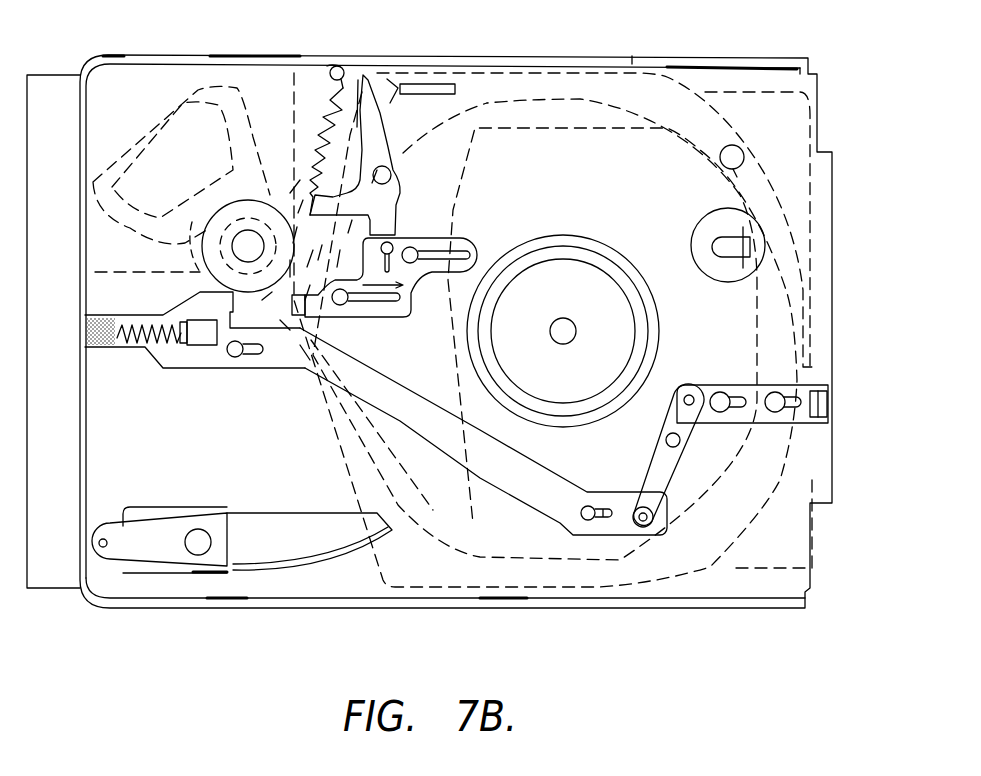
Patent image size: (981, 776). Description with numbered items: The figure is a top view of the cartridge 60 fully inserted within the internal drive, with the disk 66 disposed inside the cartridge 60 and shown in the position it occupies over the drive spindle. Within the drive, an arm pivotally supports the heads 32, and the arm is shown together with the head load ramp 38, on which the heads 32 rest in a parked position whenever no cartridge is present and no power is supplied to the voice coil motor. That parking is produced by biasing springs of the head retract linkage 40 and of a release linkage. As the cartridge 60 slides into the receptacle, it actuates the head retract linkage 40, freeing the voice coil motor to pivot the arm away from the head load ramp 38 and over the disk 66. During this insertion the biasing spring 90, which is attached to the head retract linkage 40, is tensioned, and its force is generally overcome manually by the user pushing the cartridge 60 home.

The heads 32 is at (463, 468).
The head load ramp 38 is at (260, 523).
The head retract linkage 40 is at (380, 206).
The cartridge 60 is at (790, 115).
The disk 66 is at (745, 203).
The biasing spring 90 is at (326, 125).